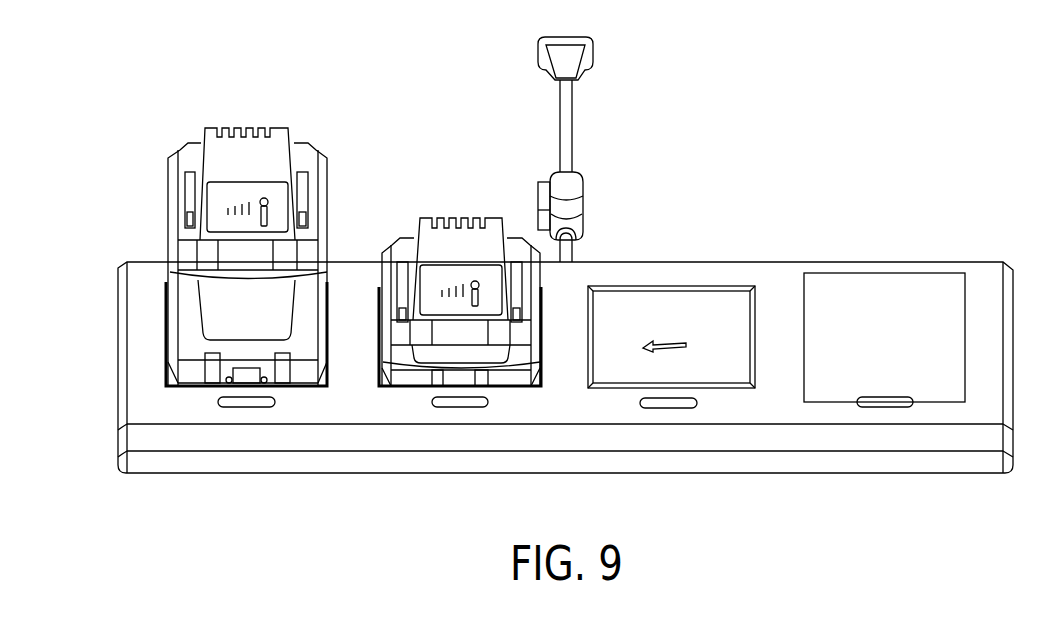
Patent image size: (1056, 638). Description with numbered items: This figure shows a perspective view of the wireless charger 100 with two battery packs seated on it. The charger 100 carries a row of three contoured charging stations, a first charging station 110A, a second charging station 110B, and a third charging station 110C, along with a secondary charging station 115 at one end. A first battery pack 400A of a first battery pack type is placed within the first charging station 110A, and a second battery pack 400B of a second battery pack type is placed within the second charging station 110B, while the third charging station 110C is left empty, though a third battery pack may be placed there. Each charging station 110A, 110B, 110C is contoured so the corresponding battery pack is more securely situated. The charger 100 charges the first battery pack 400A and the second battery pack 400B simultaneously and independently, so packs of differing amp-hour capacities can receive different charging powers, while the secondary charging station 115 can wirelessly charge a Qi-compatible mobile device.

The wireless charger 100 is at (988, 262).
The first charging station 110A is at (187, 388).
The second charging station 110B is at (393, 388).
The third charging station 110C is at (605, 388).
The secondary charging station 115 is at (830, 402).
The first battery pack 400A is at (207, 128).
The second battery pack 400B is at (420, 218).